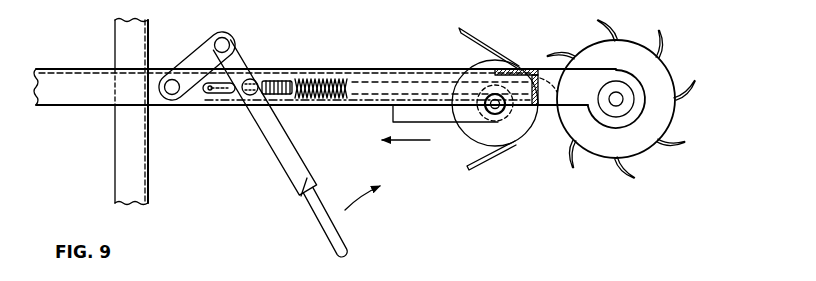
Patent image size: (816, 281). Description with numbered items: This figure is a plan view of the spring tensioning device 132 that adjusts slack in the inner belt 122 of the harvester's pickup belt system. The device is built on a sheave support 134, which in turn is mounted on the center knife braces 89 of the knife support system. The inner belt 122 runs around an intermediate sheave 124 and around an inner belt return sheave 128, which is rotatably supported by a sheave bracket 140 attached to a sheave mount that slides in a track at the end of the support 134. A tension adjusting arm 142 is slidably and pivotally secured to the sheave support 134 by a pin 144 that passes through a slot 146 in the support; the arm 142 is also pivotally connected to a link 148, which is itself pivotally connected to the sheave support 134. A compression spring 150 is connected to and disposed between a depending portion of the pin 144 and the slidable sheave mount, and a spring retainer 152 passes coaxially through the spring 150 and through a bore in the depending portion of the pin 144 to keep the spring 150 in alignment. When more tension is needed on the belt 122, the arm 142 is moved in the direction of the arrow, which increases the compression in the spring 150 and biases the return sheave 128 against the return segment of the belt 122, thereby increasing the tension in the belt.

The center knife braces 89 is at (120, 135).
The inner belt 122 is at (486, 55).
The intermediate sheave 124 is at (650, 77).
The inner belt return sheave 128 is at (512, 128).
The spring tensioning device 132 is at (305, 65).
The sheave support 134 is at (225, 108).
The sheave bracket 140 is at (441, 117).
The tension adjusting arm 142 is at (292, 160).
The pin 144 is at (258, 100).
The slot 146 is at (232, 68).
The link 148 is at (180, 70).
The compression spring 150 is at (336, 80).
The spring retainer 152 is at (193, 105).